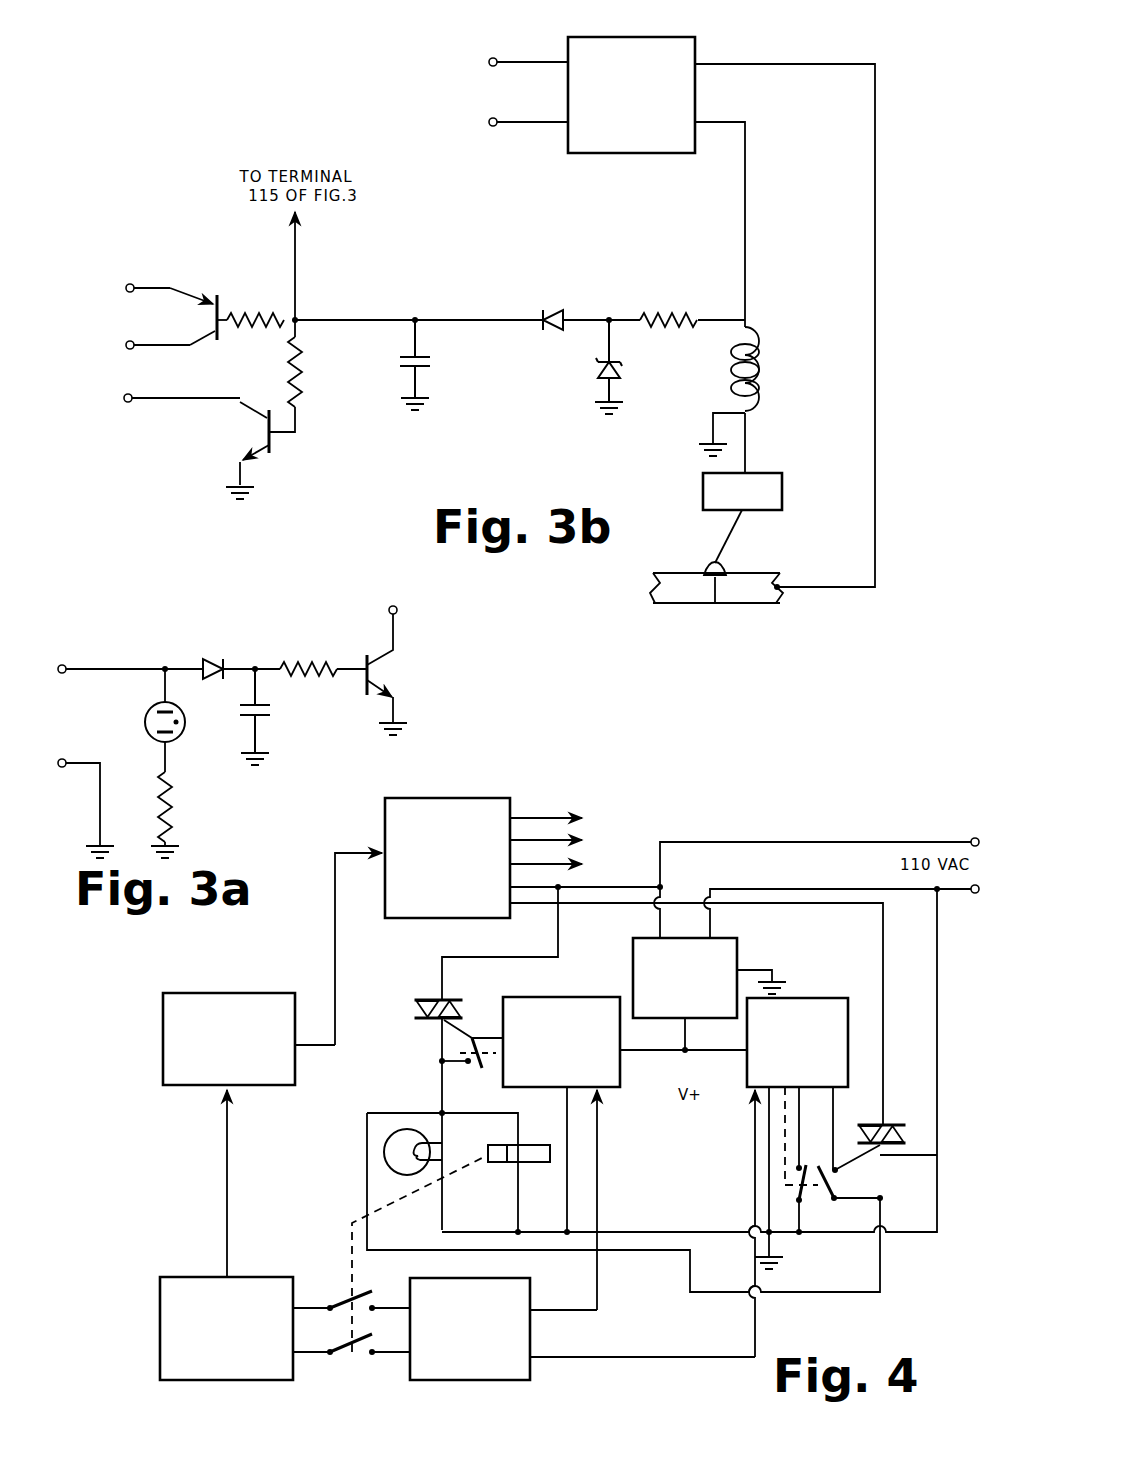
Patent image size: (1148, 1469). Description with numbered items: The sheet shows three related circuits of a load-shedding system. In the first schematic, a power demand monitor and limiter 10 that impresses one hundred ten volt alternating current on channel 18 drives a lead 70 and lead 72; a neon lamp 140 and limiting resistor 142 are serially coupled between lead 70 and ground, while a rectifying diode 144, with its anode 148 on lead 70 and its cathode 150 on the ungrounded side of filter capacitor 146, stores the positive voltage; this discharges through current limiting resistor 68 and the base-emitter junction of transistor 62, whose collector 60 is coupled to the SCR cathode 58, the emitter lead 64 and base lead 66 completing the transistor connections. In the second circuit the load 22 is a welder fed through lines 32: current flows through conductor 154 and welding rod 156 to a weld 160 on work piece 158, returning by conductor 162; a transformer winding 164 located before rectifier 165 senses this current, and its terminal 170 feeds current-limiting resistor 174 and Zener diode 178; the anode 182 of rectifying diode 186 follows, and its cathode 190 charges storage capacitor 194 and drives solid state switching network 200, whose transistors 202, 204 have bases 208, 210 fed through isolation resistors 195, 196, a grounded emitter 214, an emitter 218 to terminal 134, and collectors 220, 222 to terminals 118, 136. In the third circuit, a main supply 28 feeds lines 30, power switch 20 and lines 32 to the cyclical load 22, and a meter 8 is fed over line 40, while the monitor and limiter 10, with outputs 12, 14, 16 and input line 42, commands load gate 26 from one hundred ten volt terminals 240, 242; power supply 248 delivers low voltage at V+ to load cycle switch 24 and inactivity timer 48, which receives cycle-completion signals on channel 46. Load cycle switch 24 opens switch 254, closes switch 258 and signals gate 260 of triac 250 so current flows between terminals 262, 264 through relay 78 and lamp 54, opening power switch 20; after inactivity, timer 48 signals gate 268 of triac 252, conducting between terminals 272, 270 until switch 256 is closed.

In FIG. 4, the meter 8 is at (210, 992).
In FIG. 4, the power demand monitor and limiter 10 is at (486, 798).
In FIG. 4, the output line 12 is at (534, 816).
In FIG. 4, the output line 14 is at (565, 838).
In FIG. 4, the output line 16 is at (564, 862).
In FIG. 4, the channel 18 is at (542, 916).
In FIG. 4, the power switch 20 is at (346, 1364).
In FIG. 3B, the cyclical load 22 is at (640, 154).
In FIG. 4, the cyclical load 22 is at (532, 1380).
In FIG. 4, the load cycle switch 24 is at (830, 997).
In FIG. 4, the load gate 26 is at (372, 1073).
In FIG. 4, the main supply 28 is at (192, 1277).
In FIG. 4, the lines 30 is at (302, 1310).
In FIG. 3B, the lines 32 is at (530, 62).
In FIG. 4, the lines 32 is at (377, 1310).
In FIG. 4, the meter input line 40 is at (226, 1144).
In FIG. 4, the monitor input line 42 is at (335, 902).
In FIG. 4, the channel 46 is at (599, 1172).
In FIG. 4, the inactivity timer 48 is at (586, 997).
In FIG. 4, the lamp 54 is at (397, 1170).
In FIG. 3A, the cathode 58 is at (398, 614).
In FIG. 3A, the collector 60 is at (400, 652).
In FIG. 3A, the transistor 62 is at (408, 686).
In FIG. 3A, the emitter lead 64 is at (402, 710).
In FIG. 3A, the base lead 66 is at (350, 662).
In FIG. 3A, the current limiting resistor 68 is at (300, 661).
In FIG. 3A, the lead 70 is at (88, 665).
In FIG. 4, the lead 70 is at (632, 886).
In FIG. 3A, the lead 72 is at (82, 760).
In FIG. 4, the lead 72 is at (612, 905).
In FIG. 4, the relay 78 is at (504, 1164).
In FIG. 3B, the terminal 118 is at (126, 403).
In FIG. 3B, the terminal 134 is at (128, 284).
In FIG. 3B, the terminal 136 is at (125, 349).
In FIG. 3A, the neon lamp 140 is at (142, 724).
In FIG. 3A, the limiting resistor 142 is at (170, 800).
In FIG. 3A, the rectifying diode 144 is at (208, 650).
In FIG. 3A, the filter capacitor 146 is at (272, 724).
In FIG. 3A, the anode 148 is at (186, 665).
In FIG. 3A, the cathode 150 is at (240, 665).
In FIG. 3B, the conductor 154 is at (747, 162).
In FIG. 3B, the welding rod 156 is at (740, 518).
In FIG. 3B, the work piece 158 is at (683, 610).
In FIG. 3B, the weld 160 is at (704, 566).
In FIG. 3B, the conductor 162 is at (876, 166).
In FIG. 3B, the transformer winding 164 is at (766, 350).
In FIG. 3B, the rectifier 165 is at (786, 472).
In FIG. 3B, the terminal 170 is at (722, 320).
In FIG. 3B, the current-limiting resistor 174 is at (668, 313).
In FIG. 3B, the Zener diode 178 is at (590, 376).
In FIG. 3B, the anode 182 is at (580, 318).
In FIG. 3B, the rectifying diode 186 is at (549, 306).
In FIG. 3B, the cathode 190 is at (486, 318).
In FIG. 3B, the storage capacitor 194 is at (432, 364).
In FIG. 3B, the isolation resistor 195 is at (300, 380).
In FIG. 3B, the isolation resistor 196 is at (268, 314).
In FIG. 3B, the solid state switching network 200 is at (330, 310).
In FIG. 3B, the transistor 202 is at (208, 446).
In FIG. 3B, the transistor 204 is at (165, 320).
In FIG. 3B, the base 208 is at (296, 437).
In FIG. 3B, the base 210 is at (222, 326).
In FIG. 3B, the emitter 214 is at (238, 460).
In FIG. 3B, the emitter 218 is at (193, 292).
In FIG. 3B, the collector 220 is at (240, 406).
In FIG. 3B, the collector 222 is at (190, 352).
In FIG. 4, the terminal 240 is at (972, 839).
In FIG. 4, the terminal 242 is at (972, 896).
In FIG. 4, the power supply 248 is at (742, 948).
In FIG. 4, the triac 250 is at (896, 1120).
In FIG. 4, the triac 252 is at (402, 1014).
In FIG. 4, the switch 254 is at (842, 1182).
In FIG. 4, the switch 256 is at (486, 1074).
In FIG. 4, the switch 258 is at (812, 1206).
In FIG. 4, the gate 260 is at (838, 1165).
In FIG. 4, the terminal 262 is at (925, 1158).
In FIG. 4, the terminal 264 is at (884, 984).
In FIG. 4, the gate 268 is at (462, 1024).
In FIG. 4, the terminal 270 is at (440, 1043).
In FIG. 4, the terminal 272 is at (441, 958).